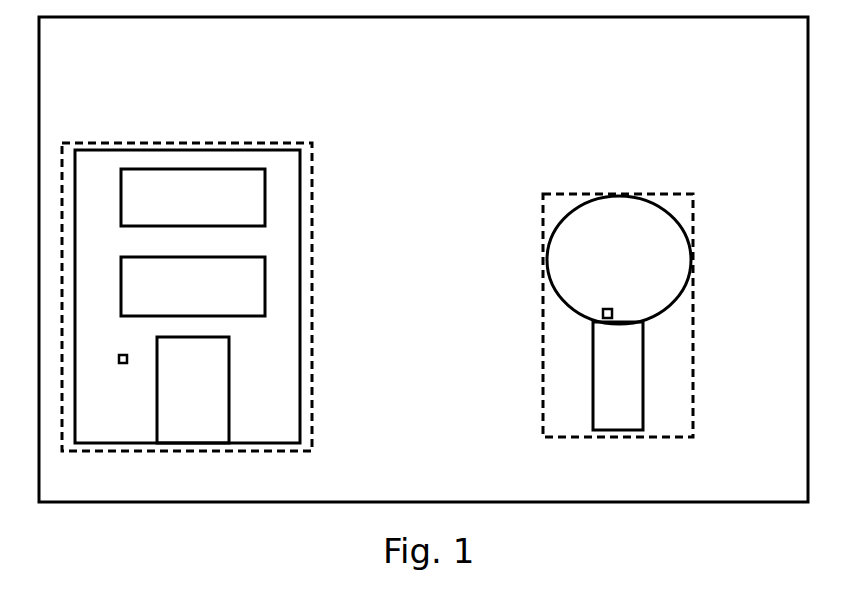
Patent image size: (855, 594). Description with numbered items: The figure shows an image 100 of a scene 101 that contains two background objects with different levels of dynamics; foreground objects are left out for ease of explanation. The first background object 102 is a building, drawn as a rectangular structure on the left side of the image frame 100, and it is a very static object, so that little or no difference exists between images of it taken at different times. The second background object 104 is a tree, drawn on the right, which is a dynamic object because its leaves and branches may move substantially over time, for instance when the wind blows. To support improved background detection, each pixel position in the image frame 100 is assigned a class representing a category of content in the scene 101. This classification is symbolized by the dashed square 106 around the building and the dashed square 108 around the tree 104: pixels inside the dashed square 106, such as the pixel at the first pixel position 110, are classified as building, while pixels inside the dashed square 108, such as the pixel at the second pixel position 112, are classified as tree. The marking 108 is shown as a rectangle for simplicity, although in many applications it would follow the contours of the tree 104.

The image 100 is at (563, 503).
The scene 101 is at (686, 481).
The first background object 102 is at (222, 147).
The second background object 104 is at (691, 261).
The dashed square 106 is at (312, 260).
The dashed square 108 is at (693, 355).
The first pixel position 110 is at (123, 363).
The second pixel position 112 is at (609, 318).